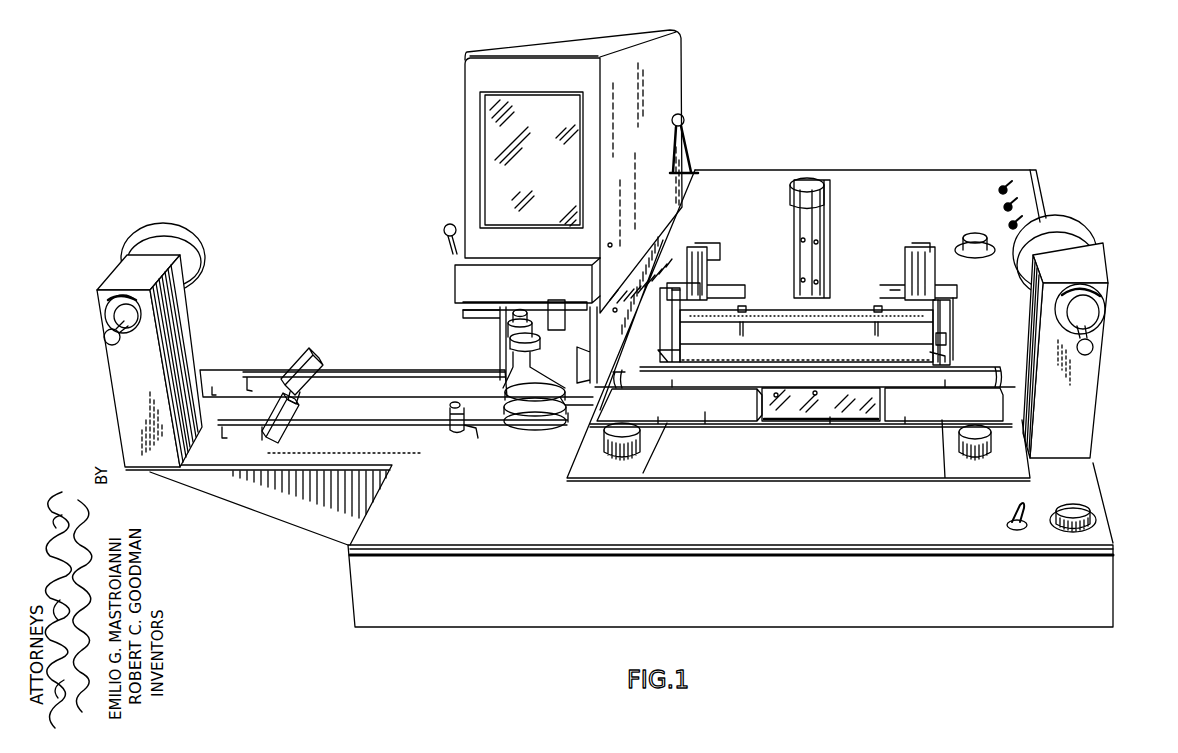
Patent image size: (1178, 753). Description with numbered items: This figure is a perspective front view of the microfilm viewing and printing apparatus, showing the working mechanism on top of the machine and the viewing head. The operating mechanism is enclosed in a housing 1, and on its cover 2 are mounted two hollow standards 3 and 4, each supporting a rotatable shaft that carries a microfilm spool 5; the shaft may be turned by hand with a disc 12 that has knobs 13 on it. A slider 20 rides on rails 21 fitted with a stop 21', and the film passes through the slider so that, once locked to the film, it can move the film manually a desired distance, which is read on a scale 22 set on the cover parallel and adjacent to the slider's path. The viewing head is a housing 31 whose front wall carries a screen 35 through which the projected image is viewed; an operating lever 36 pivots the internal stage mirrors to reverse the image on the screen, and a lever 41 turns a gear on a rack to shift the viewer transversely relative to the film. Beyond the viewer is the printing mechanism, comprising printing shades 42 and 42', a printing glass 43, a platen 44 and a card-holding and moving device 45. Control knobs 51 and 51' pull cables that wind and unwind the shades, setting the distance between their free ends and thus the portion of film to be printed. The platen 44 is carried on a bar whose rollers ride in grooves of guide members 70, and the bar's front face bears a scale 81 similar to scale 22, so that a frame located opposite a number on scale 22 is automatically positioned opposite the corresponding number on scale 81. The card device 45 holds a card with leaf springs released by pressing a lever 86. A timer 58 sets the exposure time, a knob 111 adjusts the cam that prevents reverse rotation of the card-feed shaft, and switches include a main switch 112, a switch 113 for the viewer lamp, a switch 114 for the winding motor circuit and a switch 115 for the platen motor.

The housing 1 is at (738, 601).
The cover 2 is at (662, 19).
The hollow standard 3 is at (160, 262).
The hollow standard 4 is at (1087, 268).
The microfilm spool 5 is at (173, 235).
The disc 12 is at (150, 322).
The knobs 13 is at (104, 334).
The slider 20 is at (298, 354).
The rails 21 is at (390, 392).
The stop 21' is at (462, 441).
The scale 22 is at (417, 458).
The housing 31 is at (483, 73).
The screen 35 is at (494, 123).
The operating lever 36 is at (684, 118).
The lever 41 is at (444, 228).
The printing shade 42 is at (679, 424).
The printing shade 42' is at (944, 423).
The printing glass 43 is at (815, 403).
The platen 44 is at (513, 330).
The card-holding and moving device 45 is at (805, 242).
The control knob 51 is at (611, 465).
The control knob 51' is at (951, 449).
The timer 58 is at (1085, 512).
The guide member 70 is at (663, 360).
The scale 81 is at (765, 310).
The lever 86 is at (826, 187).
The knob 111 is at (965, 237).
The main switch 112 is at (1020, 222).
The switch 113 is at (1010, 521).
The switch 114 is at (1015, 205).
The switch 115 is at (1010, 188).